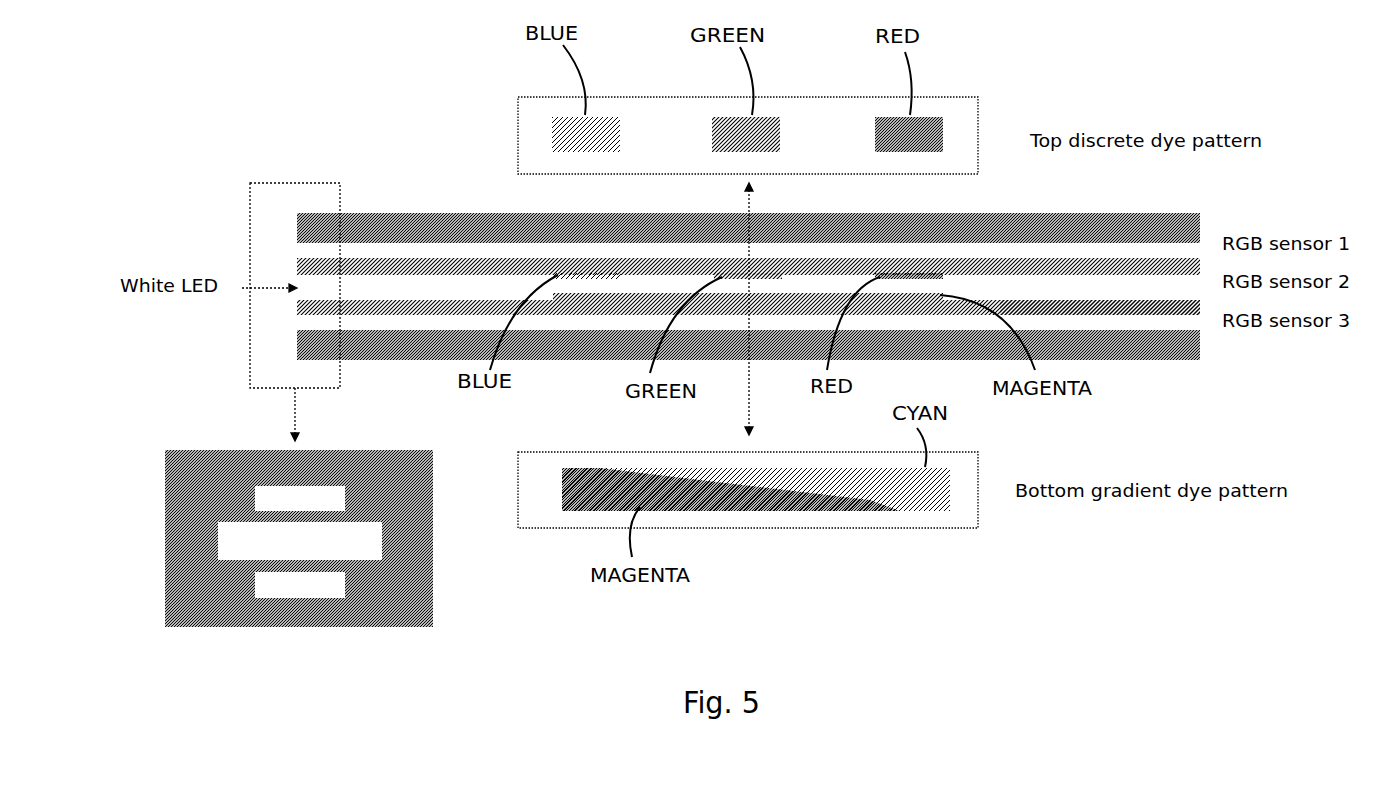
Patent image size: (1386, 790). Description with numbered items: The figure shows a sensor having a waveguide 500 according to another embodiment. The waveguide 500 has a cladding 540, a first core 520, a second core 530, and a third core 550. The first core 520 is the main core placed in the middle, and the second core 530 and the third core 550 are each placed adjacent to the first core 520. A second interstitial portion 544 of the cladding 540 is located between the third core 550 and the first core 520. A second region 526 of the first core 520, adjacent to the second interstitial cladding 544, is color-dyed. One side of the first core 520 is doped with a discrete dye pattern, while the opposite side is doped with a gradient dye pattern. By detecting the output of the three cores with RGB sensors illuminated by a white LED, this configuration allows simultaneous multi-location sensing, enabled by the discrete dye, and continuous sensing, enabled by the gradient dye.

The waveguide 500 is at (361, 98).
The first core 520 is at (380, 300).
The second region of the first core 526 is at (635, 303).
The second core 530 is at (460, 242).
The cladding 540 is at (385, 214).
The second interstitial portion of the cladding 544 is at (1138, 308).
The third core 550 is at (435, 329).